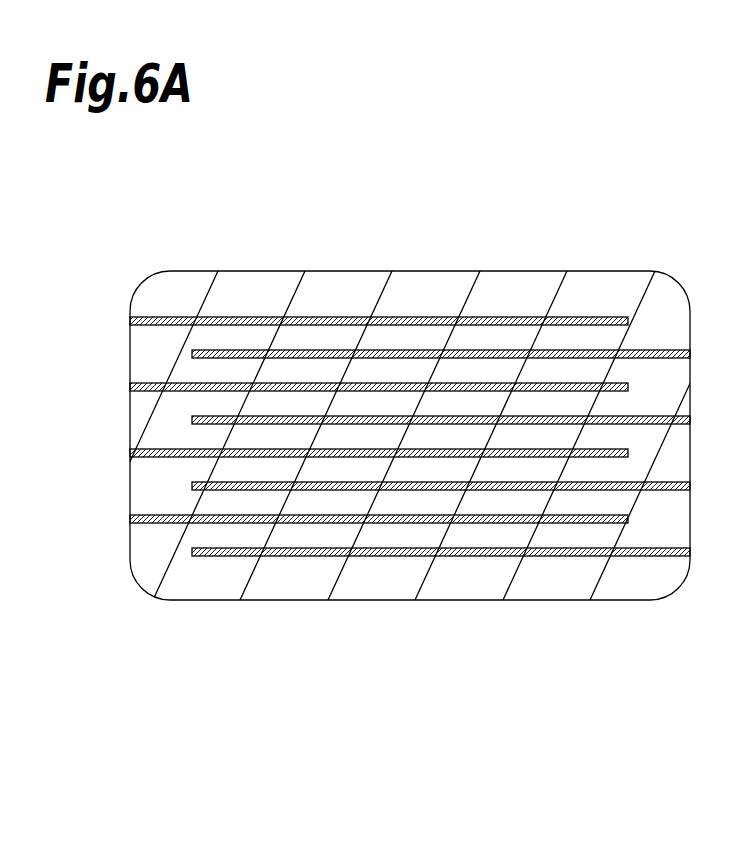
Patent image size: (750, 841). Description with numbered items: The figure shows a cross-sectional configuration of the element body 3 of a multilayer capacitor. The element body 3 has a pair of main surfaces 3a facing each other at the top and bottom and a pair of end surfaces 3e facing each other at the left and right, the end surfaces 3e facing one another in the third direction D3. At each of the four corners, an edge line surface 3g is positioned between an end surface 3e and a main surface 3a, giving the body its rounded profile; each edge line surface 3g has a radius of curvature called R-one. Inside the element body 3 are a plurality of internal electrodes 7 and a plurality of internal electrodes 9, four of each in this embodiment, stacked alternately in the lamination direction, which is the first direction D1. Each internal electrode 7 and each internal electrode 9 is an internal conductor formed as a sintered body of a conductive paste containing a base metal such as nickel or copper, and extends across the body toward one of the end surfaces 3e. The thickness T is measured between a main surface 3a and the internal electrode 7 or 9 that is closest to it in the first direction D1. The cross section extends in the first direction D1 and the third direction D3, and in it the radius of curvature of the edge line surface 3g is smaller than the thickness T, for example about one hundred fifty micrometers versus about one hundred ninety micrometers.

The element body 3 is at (505, 262).
The main surface 3a is at (322, 270).
The end surface 3e is at (129, 352).
The edge line surface 3g is at (142, 281).
The internal electrode 7 is at (520, 316).
The internal electrode 9 is at (533, 557).
The thickness T is at (414, 280).
The first direction D1 is at (73, 396).
The third direction D3 is at (497, 756).